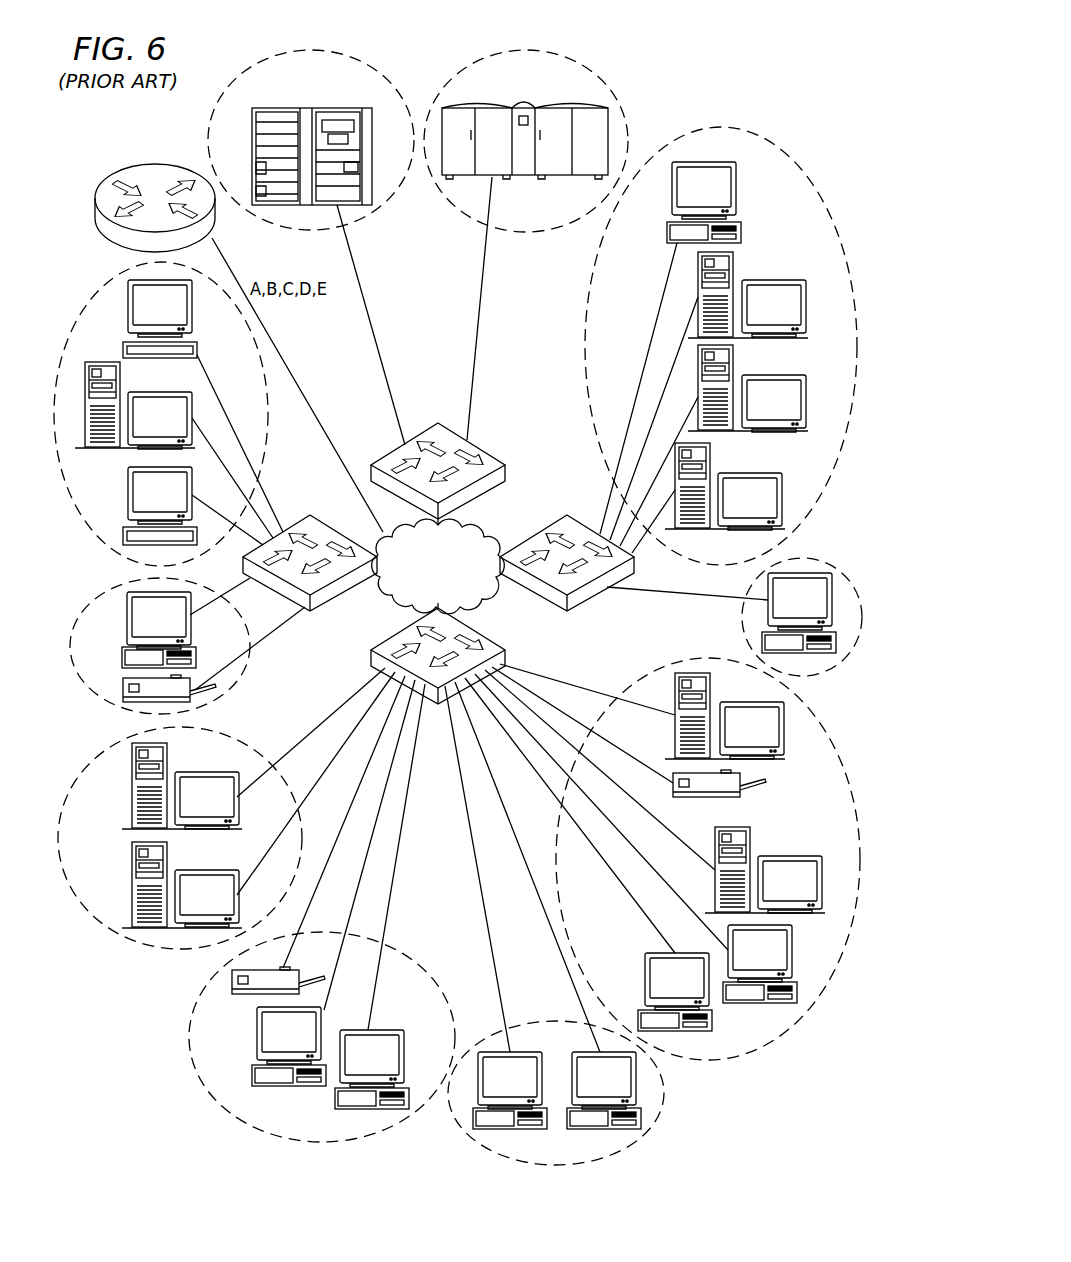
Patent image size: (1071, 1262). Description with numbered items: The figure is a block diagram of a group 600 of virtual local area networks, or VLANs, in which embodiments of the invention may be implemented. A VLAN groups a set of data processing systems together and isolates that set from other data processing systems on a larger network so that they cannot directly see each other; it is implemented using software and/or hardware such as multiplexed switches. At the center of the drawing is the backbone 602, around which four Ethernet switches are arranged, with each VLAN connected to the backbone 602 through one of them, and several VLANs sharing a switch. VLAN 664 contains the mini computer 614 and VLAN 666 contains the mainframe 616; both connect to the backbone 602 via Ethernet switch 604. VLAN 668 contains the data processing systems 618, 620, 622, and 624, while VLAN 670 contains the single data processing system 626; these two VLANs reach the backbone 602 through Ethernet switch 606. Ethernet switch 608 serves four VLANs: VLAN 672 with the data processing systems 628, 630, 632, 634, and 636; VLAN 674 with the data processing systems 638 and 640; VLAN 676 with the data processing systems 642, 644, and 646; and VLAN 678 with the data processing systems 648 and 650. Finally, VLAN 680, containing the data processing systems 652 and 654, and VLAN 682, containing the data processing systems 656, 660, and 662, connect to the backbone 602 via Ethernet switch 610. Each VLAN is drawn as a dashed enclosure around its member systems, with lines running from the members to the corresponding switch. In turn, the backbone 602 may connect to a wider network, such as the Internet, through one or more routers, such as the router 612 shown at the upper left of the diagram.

The group of virtual local area networks 600 is at (668, 93).
The backbone 602 is at (488, 532).
The Ethernet switch 604 is at (513, 437).
The Ethernet switch 606 is at (583, 598).
The Ethernet switch 608 is at (497, 636).
The Ethernet switch 610 is at (345, 594).
The router 612 is at (157, 164).
The mini computer 614 is at (307, 108).
The mainframe 616 is at (527, 176).
The data processing system 618 is at (687, 201).
The data processing system 620 is at (757, 319).
The data processing system 622 is at (757, 414).
The data processing system 624 is at (733, 512).
The data processing system 626 is at (783, 612).
The data processing system 628 is at (735, 741).
The data processing system 630 is at (757, 790).
The data processing system 632 is at (773, 895).
The data processing system 634 is at (743, 964).
The data processing system 636 is at (660, 992).
The data processing system 638 is at (587, 1091).
The data processing system 640 is at (493, 1091).
The data processing system 642 is at (355, 1069).
The data processing system 644 is at (272, 1046).
The data processing system 646 is at (240, 995).
The data processing system 648 is at (190, 909).
The data processing system 650 is at (190, 811).
The data processing system 652 is at (122, 690).
The data processing system 654 is at (142, 631).
The data processing system 656 is at (143, 506).
The data processing system 660 is at (143, 431).
The data processing system 662 is at (143, 319).
The VLAN 664 is at (243, 69).
The VLAN 666 is at (580, 62).
The VLAN 668 is at (770, 138).
The VLAN 670 is at (742, 625).
The VLAN 672 is at (763, 1048).
The VLAN 674 is at (667, 1107).
The VLAN 676 is at (192, 1052).
The VLAN 678 is at (115, 935).
The VLAN 680 is at (100, 590).
The VLAN 682 is at (100, 285).